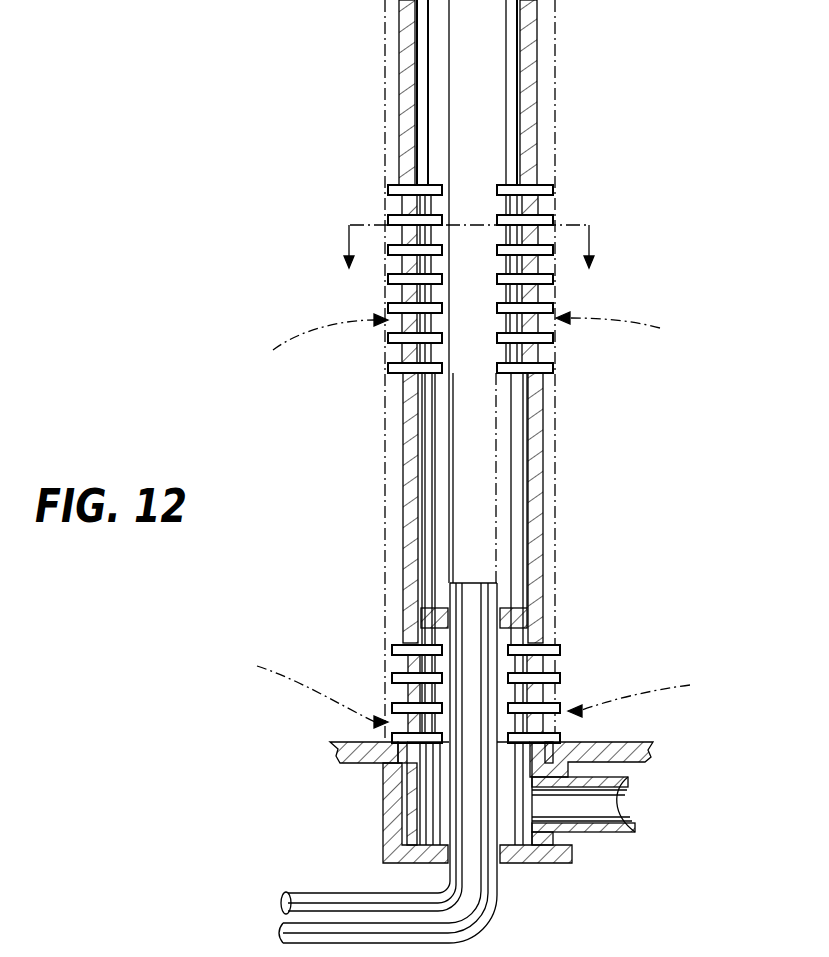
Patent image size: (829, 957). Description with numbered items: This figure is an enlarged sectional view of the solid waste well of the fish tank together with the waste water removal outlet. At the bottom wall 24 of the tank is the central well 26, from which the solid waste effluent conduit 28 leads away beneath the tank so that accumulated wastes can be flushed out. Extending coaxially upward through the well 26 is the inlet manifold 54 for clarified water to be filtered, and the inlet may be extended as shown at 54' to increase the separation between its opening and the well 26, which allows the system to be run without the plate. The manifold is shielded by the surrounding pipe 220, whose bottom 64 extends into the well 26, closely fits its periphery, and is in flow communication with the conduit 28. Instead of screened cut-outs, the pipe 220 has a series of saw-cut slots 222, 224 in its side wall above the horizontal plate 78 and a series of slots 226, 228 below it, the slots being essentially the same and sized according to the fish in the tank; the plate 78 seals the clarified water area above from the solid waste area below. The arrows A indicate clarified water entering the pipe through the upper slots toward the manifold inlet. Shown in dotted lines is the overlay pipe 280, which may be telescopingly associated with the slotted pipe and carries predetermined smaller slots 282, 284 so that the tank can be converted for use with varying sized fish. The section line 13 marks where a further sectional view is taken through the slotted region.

The pipe 220 is at (402, 95).
The section line 13- 13 is at (474, 246).
The slot 222 is at (393, 307).
The slot 224 is at (547, 278).
The smaller slot 282 is at (387, 336).
The arrows A is at (473, 520).
The overlay pipe 280 is at (385, 542).
The extended inlet 54' is at (569, 509).
The inlet manifold 54 is at (454, 730).
The horizontal plate 78 is at (517, 605).
The slot 226 is at (393, 652).
The slot 228 is at (556, 678).
The smaller slot 284 is at (395, 708).
The bottom wall 24 is at (357, 743).
The central well 26 is at (392, 808).
The bottom 64 is at (412, 833).
The solid waste effluent conduit 28 is at (642, 832).